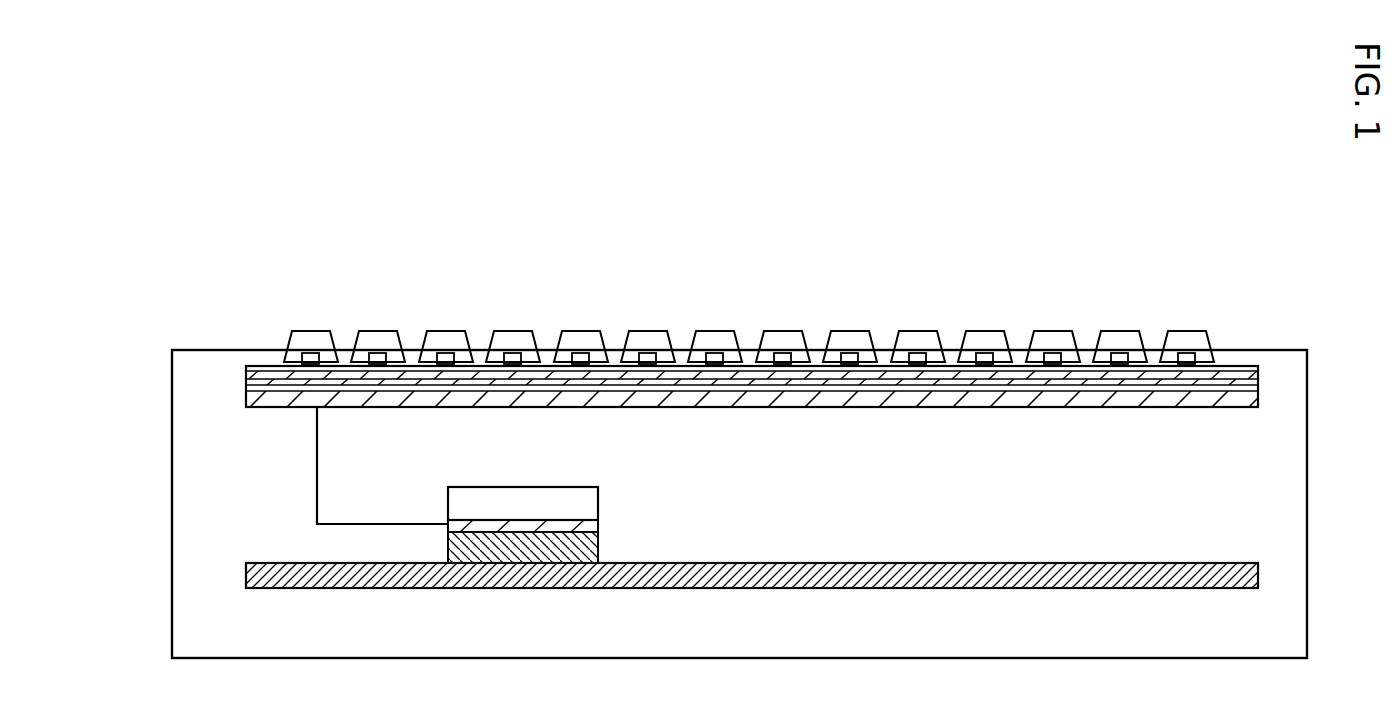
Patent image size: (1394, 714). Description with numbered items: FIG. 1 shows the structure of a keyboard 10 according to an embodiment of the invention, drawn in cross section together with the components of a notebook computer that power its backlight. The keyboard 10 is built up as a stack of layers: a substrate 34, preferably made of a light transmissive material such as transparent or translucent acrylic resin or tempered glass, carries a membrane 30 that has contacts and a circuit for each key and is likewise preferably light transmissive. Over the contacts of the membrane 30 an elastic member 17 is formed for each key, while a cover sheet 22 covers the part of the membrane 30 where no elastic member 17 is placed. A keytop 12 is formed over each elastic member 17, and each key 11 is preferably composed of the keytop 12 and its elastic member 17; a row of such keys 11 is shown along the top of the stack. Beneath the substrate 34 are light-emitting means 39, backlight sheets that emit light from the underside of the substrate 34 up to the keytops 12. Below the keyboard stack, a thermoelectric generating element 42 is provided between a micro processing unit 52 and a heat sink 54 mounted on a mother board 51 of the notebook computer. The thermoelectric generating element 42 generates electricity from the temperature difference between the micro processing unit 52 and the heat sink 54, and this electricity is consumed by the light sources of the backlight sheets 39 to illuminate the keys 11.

The keyboard 10 is at (662, 196).
The key 11 is at (746, 278).
The keytop 12 is at (322, 336).
The elastic member 17 is at (318, 358).
The cover sheet 22 is at (245, 368).
The membrane 30 is at (245, 372).
The substrate 34 is at (245, 380).
The light-emitting means 39 is at (245, 393).
The thermoelectric generating element 42 is at (583, 524).
The mother board 51 is at (263, 563).
The micro processing unit (MPU) 52 is at (597, 551).
The heat sink 54 is at (562, 513).